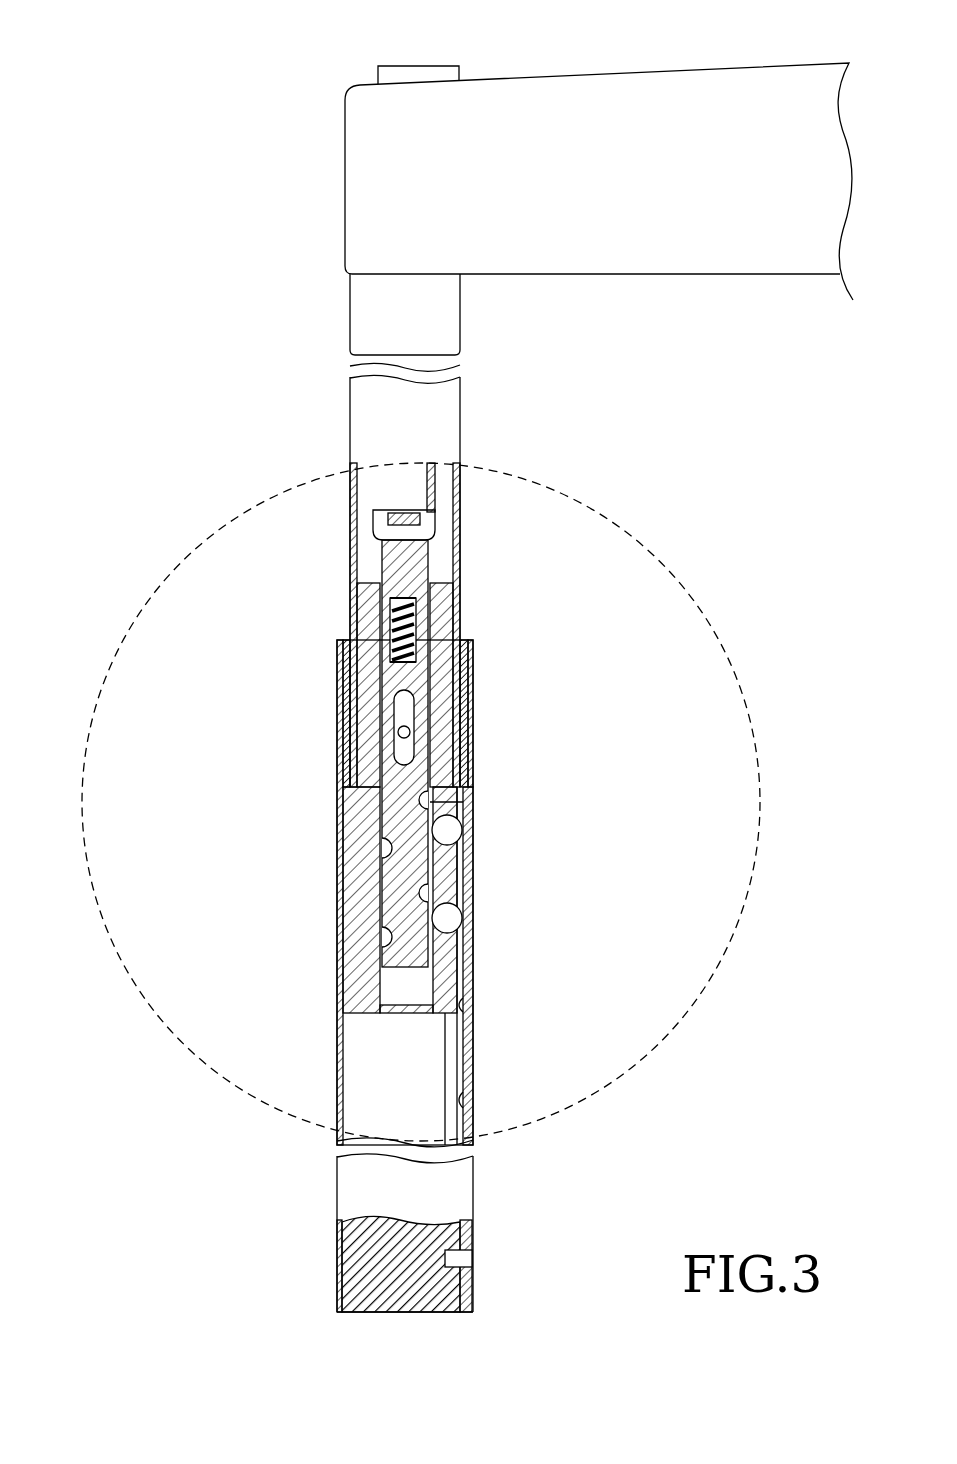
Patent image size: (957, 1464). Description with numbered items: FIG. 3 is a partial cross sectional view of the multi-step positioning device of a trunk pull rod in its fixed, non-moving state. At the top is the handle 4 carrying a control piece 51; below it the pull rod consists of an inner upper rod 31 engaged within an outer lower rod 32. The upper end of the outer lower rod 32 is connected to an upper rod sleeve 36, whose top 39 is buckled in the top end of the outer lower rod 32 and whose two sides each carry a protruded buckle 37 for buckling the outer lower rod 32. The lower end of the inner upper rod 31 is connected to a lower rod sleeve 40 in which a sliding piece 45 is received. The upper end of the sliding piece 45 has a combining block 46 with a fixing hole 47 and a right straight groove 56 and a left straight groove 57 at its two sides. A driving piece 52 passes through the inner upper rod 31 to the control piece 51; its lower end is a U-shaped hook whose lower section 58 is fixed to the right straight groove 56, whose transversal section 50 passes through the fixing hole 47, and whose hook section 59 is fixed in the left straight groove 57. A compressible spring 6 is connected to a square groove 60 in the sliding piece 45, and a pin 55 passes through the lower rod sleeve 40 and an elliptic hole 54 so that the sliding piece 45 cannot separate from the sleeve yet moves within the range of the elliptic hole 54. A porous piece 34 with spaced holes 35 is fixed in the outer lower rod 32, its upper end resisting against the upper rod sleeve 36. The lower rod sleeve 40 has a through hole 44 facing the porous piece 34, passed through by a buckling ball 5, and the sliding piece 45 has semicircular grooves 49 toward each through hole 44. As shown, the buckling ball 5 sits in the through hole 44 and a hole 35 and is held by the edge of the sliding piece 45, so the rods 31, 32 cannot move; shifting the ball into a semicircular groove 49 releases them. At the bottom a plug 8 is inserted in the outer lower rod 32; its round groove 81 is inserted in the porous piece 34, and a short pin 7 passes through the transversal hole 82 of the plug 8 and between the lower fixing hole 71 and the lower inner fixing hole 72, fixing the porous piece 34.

The handle 4 is at (656, 86).
The control piece 51 is at (405, 76).
The inner upper rod 31 is at (456, 614).
The top of the upper rod sleeve 39 is at (468, 655).
The outer lower rod 32 is at (471, 1078).
The square groove 60 is at (390, 662).
The protruded buckle 37 is at (470, 746).
The fixing hole 47 is at (426, 508).
The hook section 59 is at (372, 525).
The right straight groove 56 is at (420, 518).
The lower section 58 is at (430, 518).
The left straight groove 57 is at (383, 515).
The combining block 46 is at (400, 515).
The driving piece 52 is at (436, 470).
The transversal section 50 is at (430, 548).
The lower rod sleeve 40 is at (440, 975).
The compressible spring 6 is at (396, 630).
The elliptic hole 54 is at (401, 712).
The pin 55 is at (410, 730).
The sliding piece 45 is at (424, 688).
The porous piece 34 is at (465, 1032).
The holes 35 is at (465, 846).
The upper rod sleeve 36 is at (465, 784).
The through hole 44 is at (465, 880).
The buckling ball 5 is at (450, 832).
The semicircular groove 49 is at (440, 800).
The plug 8 is at (358, 1252).
The short pin 7 is at (470, 1256).
The lower fixing hole 71 is at (470, 1270).
The lower inner fixing hole 72 is at (470, 1240).
The round groove 81 is at (470, 1292).
The transversal hole 82 is at (436, 1232).